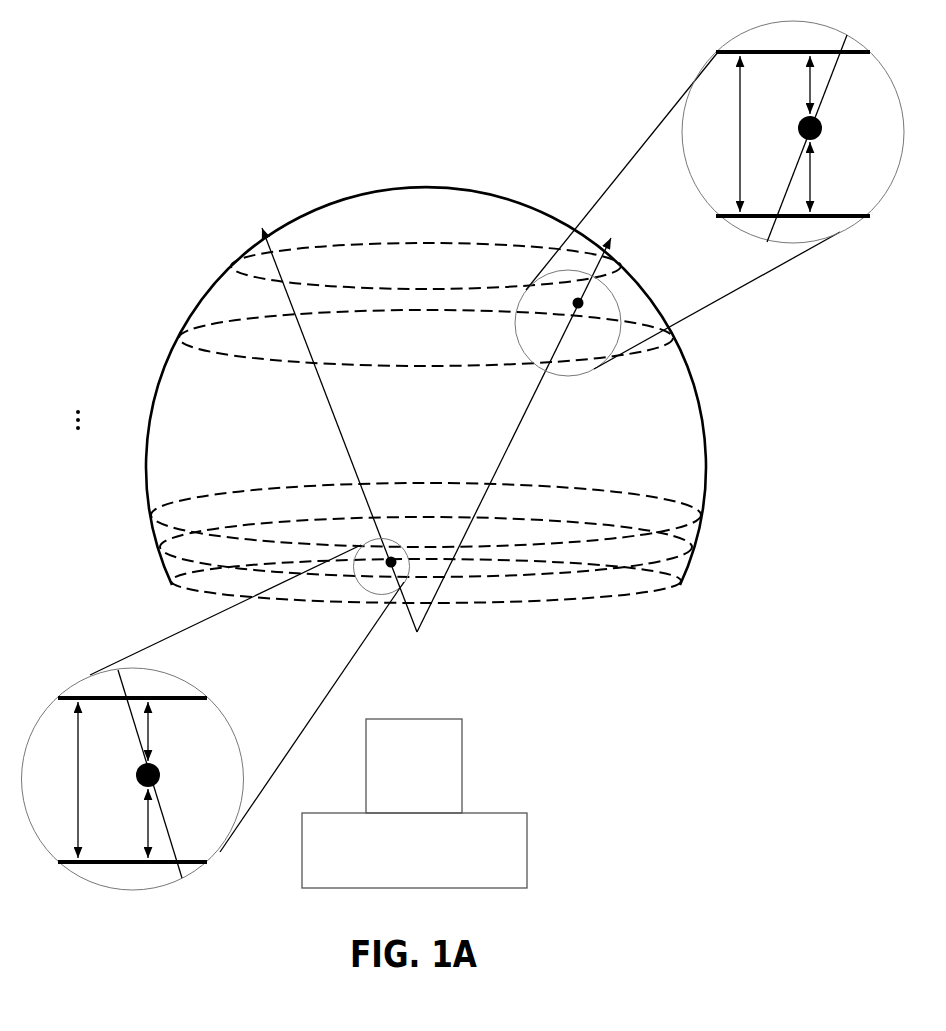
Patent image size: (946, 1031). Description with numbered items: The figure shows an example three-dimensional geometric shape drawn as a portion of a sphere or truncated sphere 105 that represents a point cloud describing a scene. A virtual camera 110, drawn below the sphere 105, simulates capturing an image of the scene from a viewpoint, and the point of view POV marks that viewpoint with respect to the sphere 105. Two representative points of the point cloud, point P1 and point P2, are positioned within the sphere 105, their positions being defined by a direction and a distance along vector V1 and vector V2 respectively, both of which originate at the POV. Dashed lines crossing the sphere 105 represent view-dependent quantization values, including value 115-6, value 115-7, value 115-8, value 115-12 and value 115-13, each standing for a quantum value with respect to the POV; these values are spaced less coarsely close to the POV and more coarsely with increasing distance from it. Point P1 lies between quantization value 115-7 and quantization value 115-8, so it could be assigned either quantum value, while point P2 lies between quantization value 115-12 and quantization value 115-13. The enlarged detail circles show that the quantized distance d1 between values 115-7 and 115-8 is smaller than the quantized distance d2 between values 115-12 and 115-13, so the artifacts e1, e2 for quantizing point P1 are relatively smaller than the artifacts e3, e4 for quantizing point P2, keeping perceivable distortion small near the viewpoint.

The sphere 105 is at (703, 392).
The camera 110 is at (490, 813).
The view-dependent quantization value 115-6 is at (166, 580).
The view-dependent quantization value 115-7 is at (154, 548).
The view-dependent quantization value 115-8 is at (150, 514).
The view-dependent quantization value 115-12 is at (177, 340).
The view-dependent quantization value 115-13 is at (230, 270).
The vector V1 is at (315, 420).
The vector V2 is at (516, 421).
The point P1 is at (382, 567).
The point P2 is at (568, 323).
The point of view POV is at (424, 646).
The quantized distance d1 is at (77, 780).
The quantized distance d2 is at (740, 134).
The artifact e1 is at (149, 731).
The artifact e2 is at (149, 823).
The artifact e3 is at (811, 85).
The artifact e4 is at (811, 177).